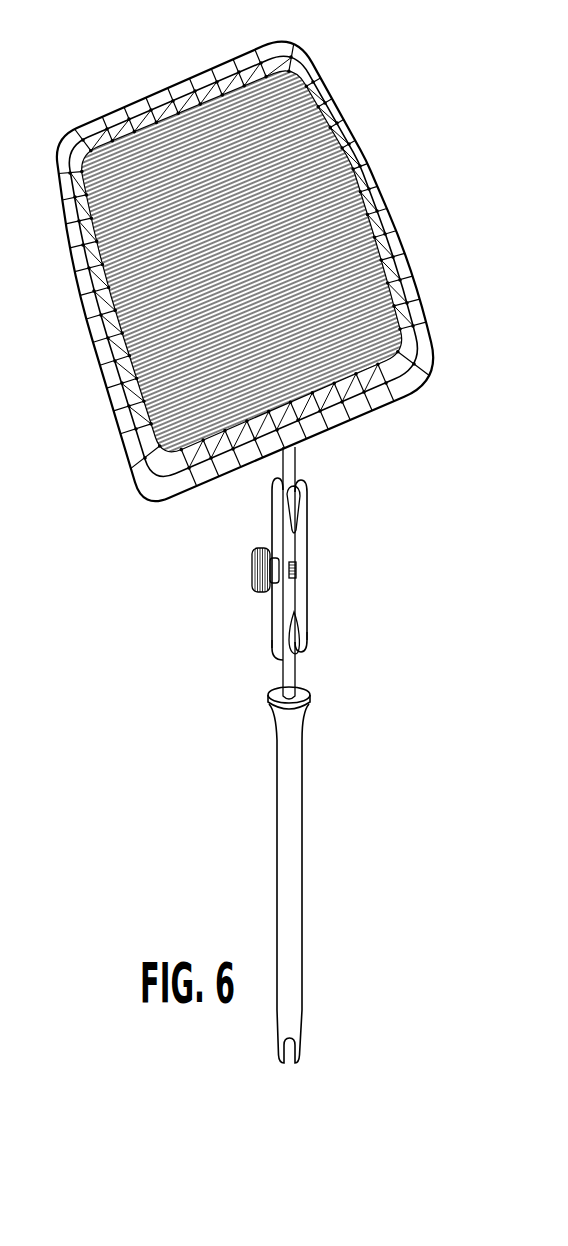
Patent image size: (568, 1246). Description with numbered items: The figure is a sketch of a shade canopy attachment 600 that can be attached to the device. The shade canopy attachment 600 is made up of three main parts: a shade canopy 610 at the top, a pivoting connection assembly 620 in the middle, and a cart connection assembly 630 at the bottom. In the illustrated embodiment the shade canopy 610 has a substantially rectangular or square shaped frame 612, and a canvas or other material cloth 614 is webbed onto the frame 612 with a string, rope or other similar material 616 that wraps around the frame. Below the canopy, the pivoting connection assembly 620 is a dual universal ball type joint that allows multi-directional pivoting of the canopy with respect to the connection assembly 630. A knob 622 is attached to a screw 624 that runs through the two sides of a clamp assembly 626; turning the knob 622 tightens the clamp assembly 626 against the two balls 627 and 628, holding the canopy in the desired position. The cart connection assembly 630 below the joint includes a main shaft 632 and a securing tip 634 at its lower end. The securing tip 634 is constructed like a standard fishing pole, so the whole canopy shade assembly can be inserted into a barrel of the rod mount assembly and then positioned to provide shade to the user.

The shade canopy attachment 600 is at (84, 84).
The shade canopy 610 is at (163, 82).
The frame 612 is at (390, 222).
The cloth 614 is at (270, 235).
The string, rope or other similar material 616 is at (374, 165).
The pivoting connection assembly 620 is at (270, 522).
The knob 622 is at (266, 595).
The screw 624 is at (297, 562).
The clamp assembly 626 is at (276, 655).
The ball 627 is at (300, 490).
The ball 628 is at (296, 623).
The cart connection assembly 630 is at (304, 783).
The main shaft 632 is at (301, 893).
The securing tip 634 is at (297, 1055).